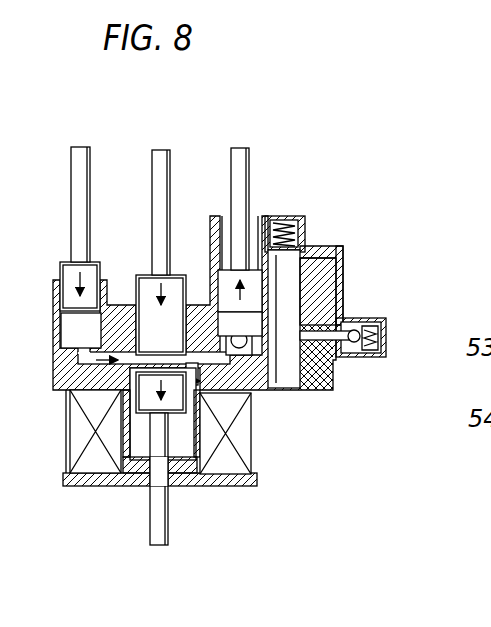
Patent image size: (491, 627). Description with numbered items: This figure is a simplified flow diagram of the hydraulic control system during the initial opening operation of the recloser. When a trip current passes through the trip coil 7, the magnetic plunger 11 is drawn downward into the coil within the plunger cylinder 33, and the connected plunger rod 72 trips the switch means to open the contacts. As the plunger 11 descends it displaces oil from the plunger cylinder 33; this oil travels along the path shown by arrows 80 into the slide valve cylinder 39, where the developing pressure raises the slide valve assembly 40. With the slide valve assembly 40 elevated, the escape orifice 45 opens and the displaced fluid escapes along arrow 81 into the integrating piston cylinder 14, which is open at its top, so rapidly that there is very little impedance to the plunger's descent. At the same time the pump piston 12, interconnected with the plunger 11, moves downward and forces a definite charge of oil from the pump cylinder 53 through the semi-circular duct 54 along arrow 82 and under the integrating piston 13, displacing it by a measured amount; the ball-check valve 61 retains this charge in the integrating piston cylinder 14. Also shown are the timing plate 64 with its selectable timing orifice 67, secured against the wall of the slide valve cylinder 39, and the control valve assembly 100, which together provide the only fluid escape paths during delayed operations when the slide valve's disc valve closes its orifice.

The trip coil 7 is at (70, 454).
The magnetic plunger 11 is at (172, 162).
The pump piston 12 is at (90, 162).
The integrating piston 13 is at (250, 160).
The integrating piston cylinder 14 is at (212, 268).
The plunger cylinder 33 is at (184, 450).
The slide valve cylinder 39 is at (335, 380).
The slide valve assembly 40 is at (300, 217).
The escape orifice 45 is at (259, 262).
The pump cylinder 53 is at (70, 318).
The semi-circular duct 54 is at (252, 394).
The ball-check valve 61 is at (247, 349).
The timing plate 64 is at (343, 292).
The timing orifice 67 is at (343, 253).
The plunger rod 72 is at (150, 527).
The arrows showing displaced oil path 80 is at (202, 394).
The arrow showing escape flow 81 is at (288, 268).
The arrow showing pump flow path 82 is at (72, 393).
The control valve assembly 100 is at (372, 322).